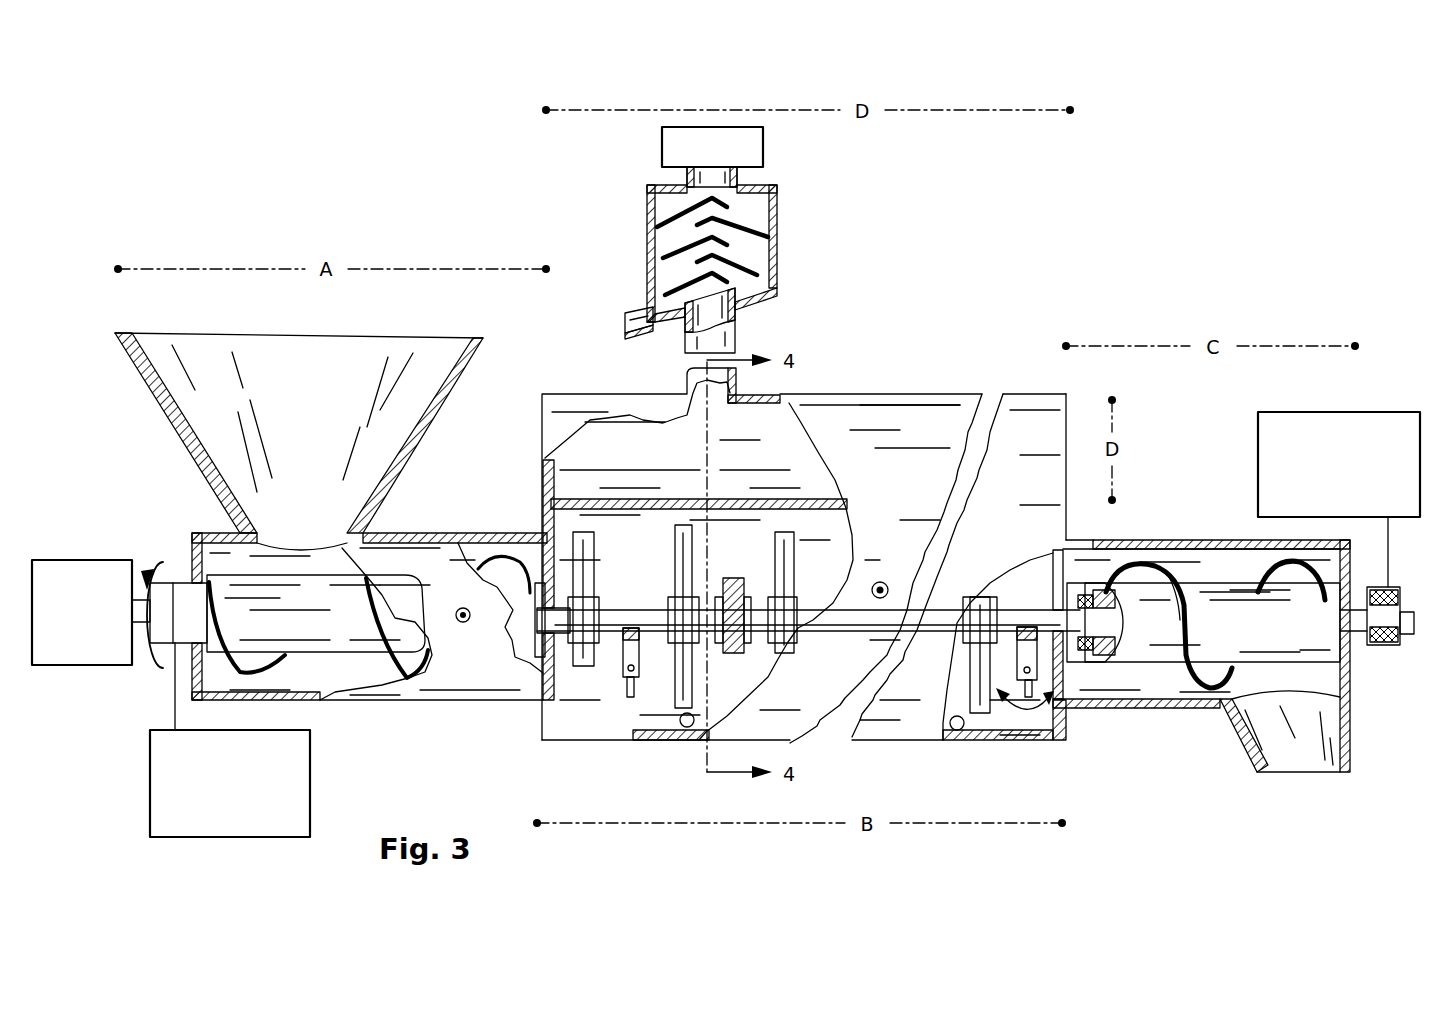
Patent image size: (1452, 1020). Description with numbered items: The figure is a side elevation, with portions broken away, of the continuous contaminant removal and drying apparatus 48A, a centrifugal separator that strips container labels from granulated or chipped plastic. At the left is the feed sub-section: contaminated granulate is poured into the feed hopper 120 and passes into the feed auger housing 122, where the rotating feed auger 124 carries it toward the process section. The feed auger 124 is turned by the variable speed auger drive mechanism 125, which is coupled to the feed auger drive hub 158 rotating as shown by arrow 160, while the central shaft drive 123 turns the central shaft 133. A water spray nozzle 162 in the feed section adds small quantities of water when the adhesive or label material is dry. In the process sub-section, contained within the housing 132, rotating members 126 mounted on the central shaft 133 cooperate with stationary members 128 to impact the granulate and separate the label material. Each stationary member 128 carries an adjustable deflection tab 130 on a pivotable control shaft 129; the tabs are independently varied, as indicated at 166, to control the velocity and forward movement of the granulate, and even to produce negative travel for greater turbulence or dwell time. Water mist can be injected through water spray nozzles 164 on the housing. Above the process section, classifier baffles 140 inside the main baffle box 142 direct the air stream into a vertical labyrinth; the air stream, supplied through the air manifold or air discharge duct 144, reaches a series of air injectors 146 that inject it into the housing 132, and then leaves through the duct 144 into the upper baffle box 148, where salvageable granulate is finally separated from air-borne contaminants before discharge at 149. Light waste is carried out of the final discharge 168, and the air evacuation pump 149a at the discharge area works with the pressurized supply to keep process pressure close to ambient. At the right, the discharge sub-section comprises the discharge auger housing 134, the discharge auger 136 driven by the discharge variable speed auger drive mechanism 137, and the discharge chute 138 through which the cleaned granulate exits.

The continuous contaminant removal and drying apparatus 48A is at (886, 326).
The feed hopper 120 is at (178, 410).
The feed auger housing 122 is at (450, 533).
The central shaft drive 123 is at (93, 665).
The feed auger 124 is at (312, 633).
The variable speed auger drive mechanism 125 is at (240, 837).
The rotating member 126 is at (594, 572).
The stationary member 128 is at (620, 672).
The control shaft 129 is at (1037, 663).
The adjustable deflection tab 130 is at (638, 700).
The housing 132 is at (887, 742).
The central shaft 133 is at (603, 610).
The discharge auger housing 134 is at (1240, 540).
The discharge auger 136 is at (1244, 636).
The discharge variable speed auger drive mechanism 137 is at (1330, 412).
The discharge chute 138 is at (1243, 745).
The classifier baffles 140 is at (658, 467).
The main baffle box 142 is at (930, 478).
The air discharge duct 144 is at (735, 332).
The air injectors 146 is at (695, 712).
The upper baffle box 148 is at (777, 262).
The air discharge 149 is at (738, 180).
The air evacuation pump 149a is at (662, 140).
The feed auger drive hub 158 is at (173, 577).
The arrow 160 is at (162, 565).
The water spray nozzle 162 is at (456, 612).
The water spray nozzles 164 is at (884, 581).
The deflection tab adjustment indication 166 is at (1020, 713).
The final discharge 168 is at (625, 330).